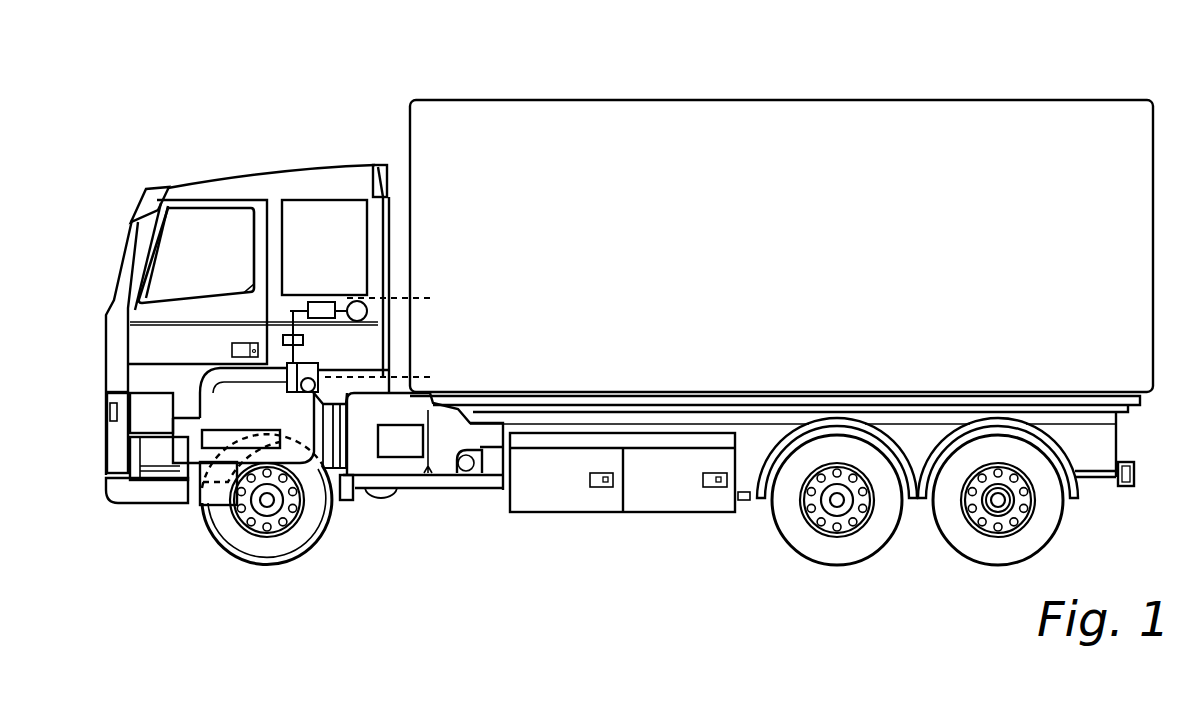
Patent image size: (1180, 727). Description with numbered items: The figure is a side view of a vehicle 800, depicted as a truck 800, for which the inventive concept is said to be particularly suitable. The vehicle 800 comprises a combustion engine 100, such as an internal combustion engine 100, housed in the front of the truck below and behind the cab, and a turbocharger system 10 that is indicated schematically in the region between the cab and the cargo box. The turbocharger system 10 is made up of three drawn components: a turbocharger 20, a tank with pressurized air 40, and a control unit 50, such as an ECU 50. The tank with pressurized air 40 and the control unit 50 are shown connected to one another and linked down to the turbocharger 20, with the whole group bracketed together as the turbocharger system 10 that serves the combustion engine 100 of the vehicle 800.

The vehicle 800 is at (358, 86).
The combustion engine 100 is at (193, 445).
The turbocharger system 10 is at (430, 298).
The turbocharger 20 is at (350, 383).
The tank with pressurized air 40 is at (330, 302).
The control unit 50 is at (382, 311).